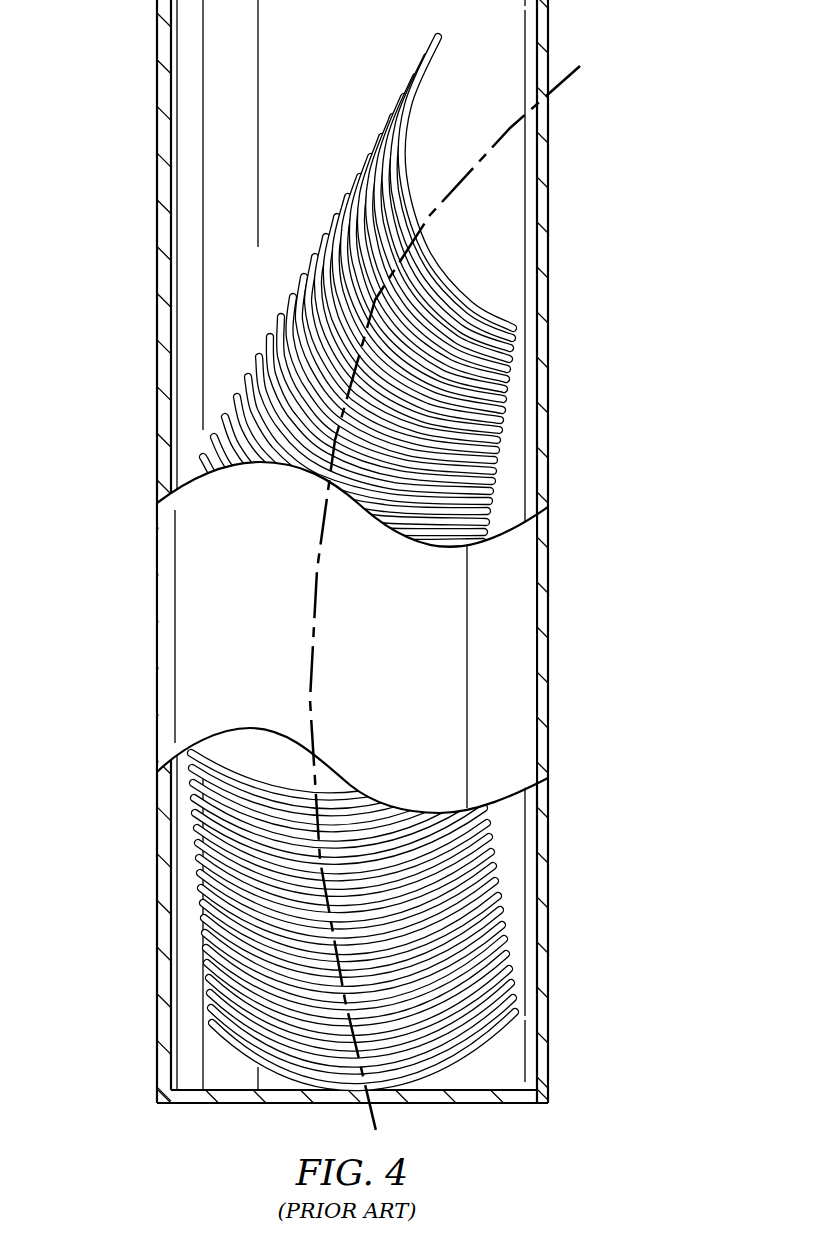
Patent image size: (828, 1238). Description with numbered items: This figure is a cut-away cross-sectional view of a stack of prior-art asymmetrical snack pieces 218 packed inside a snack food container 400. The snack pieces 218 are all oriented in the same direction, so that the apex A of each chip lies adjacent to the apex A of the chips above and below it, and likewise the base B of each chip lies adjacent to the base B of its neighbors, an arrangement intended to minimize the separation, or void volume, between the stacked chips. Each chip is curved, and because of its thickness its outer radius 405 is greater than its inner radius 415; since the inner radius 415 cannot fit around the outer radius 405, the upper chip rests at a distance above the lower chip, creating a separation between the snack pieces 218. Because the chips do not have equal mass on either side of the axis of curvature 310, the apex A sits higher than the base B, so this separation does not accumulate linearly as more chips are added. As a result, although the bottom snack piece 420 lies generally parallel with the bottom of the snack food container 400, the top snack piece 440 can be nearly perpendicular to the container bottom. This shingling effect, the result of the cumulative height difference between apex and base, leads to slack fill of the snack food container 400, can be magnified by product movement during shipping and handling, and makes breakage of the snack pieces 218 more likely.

The snack food container 400 is at (156, 635).
The axis of curvature 310 is at (568, 80).
The top snack piece 440 is at (425, 95).
The snack pieces 218 is at (477, 322).
The inner radius 415 is at (213, 976).
The outer radius 405 is at (207, 992).
The bottom snack piece 420 is at (209, 1043).
The apex A is at (192, 800).
The base B is at (490, 850).